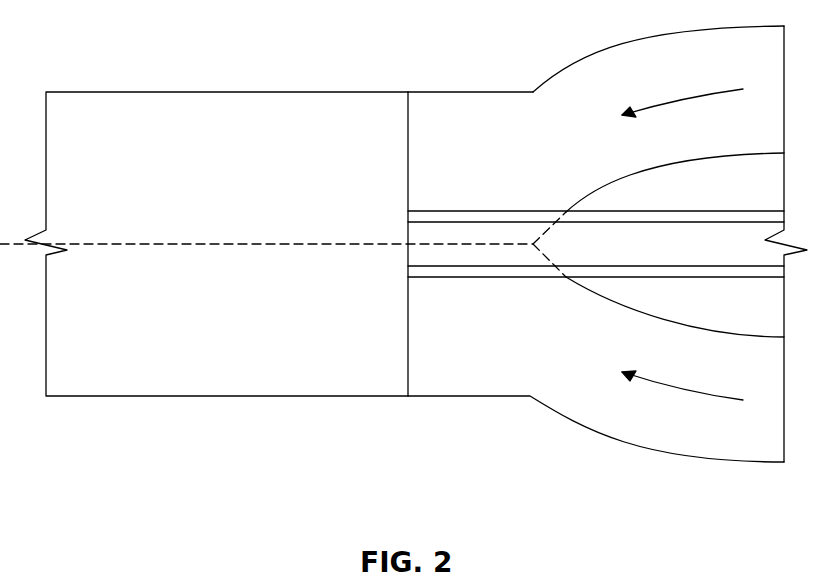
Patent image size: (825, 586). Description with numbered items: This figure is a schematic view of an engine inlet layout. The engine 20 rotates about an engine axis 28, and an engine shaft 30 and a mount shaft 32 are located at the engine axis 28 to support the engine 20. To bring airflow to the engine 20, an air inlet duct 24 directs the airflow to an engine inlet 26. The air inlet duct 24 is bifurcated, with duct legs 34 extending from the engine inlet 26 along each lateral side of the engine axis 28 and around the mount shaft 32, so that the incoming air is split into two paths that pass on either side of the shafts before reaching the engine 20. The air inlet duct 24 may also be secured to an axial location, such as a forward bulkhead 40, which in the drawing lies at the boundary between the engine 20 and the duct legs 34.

The engine 20 is at (153, 385).
The air inlet duct 24 is at (636, 423).
The engine inlet 26 is at (408, 125).
The engine axis 28 is at (188, 244).
The engine shaft 30 is at (671, 211).
The mount shaft 32 is at (693, 278).
The duct legs 34 is at (543, 110).
The forward bulkhead 40 is at (409, 110).